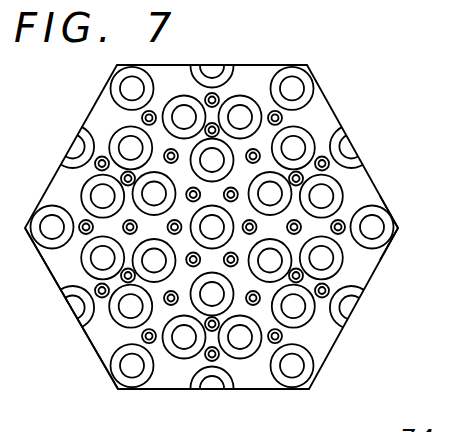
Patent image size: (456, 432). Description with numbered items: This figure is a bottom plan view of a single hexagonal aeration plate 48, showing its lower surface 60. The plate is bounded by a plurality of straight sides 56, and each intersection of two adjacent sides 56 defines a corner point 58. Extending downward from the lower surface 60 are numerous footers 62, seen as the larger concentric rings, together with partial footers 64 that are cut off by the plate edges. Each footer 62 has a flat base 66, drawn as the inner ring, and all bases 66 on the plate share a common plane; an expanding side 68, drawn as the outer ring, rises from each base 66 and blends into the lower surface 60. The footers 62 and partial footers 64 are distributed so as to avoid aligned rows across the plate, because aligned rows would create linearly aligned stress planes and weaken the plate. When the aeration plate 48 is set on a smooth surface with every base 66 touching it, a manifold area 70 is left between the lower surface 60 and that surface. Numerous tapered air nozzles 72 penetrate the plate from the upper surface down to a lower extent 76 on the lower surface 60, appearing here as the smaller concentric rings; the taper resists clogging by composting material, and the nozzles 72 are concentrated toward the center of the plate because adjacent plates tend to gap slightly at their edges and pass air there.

The aeration plate 48 is at (262, 33).
The side 56 is at (96, 350).
The corner point 58 is at (398, 228).
The lower surface 60 is at (103, 120).
The footer 62 is at (308, 97).
The partial footer 64 is at (195, 388).
The base 66 is at (298, 143).
The expanding side 68 is at (115, 85).
The manifold area 70 is at (317, 342).
The air nozzle 72 is at (349, 210).
The lower extent 76 is at (364, 282).